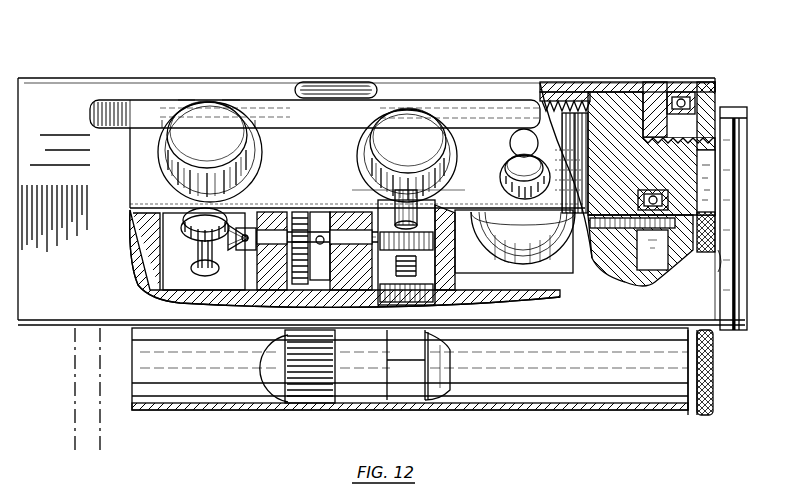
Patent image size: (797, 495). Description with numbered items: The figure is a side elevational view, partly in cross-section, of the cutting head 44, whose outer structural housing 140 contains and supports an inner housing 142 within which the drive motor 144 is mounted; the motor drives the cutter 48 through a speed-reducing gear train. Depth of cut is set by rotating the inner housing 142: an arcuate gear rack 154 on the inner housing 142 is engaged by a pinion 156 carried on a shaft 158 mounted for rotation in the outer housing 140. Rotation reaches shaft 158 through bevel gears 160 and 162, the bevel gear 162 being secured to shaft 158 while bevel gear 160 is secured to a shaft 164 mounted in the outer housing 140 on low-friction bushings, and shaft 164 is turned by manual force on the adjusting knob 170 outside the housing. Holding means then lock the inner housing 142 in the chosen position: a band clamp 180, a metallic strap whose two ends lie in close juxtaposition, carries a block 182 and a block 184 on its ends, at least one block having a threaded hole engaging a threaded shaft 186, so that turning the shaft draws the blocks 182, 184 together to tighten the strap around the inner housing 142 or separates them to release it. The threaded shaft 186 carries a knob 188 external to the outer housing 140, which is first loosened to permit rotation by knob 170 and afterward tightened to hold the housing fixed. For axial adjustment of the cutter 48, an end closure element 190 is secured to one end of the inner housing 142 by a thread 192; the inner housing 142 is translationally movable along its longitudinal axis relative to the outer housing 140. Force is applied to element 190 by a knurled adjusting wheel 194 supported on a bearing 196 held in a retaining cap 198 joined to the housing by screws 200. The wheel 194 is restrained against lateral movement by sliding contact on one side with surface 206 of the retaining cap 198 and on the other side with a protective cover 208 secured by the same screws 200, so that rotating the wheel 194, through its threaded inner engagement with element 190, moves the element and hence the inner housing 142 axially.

The cutting head 44 is at (112, 50).
The cutter 48 is at (78, 420).
The outer structural housing 140 is at (540, 88).
The inner housing 142 is at (580, 125).
The drive motor 144 is at (566, 108).
The arcuate gear rack 154 is at (315, 395).
The pinion 156 is at (315, 225).
The shaft 158 is at (345, 237).
The bevel gear 160 is at (178, 222).
The bevel gear 162 is at (262, 255).
The shaft 164 is at (180, 262).
The adjusting knob 170 is at (205, 115).
The band clamp 180 is at (420, 390).
The block 182 is at (430, 297).
The block 184 is at (425, 244).
The threaded shaft 186 is at (512, 184).
The knob 188 is at (403, 120).
The end closure element 190 is at (622, 110).
The thread 192 is at (553, 100).
The knurled adjusting wheel 194 is at (715, 86).
The bearing 196 is at (690, 95).
The retaining cap 198 is at (666, 90).
The screws 200 is at (738, 242).
The surface 206 is at (680, 120).
The protective cover 208 is at (742, 270).